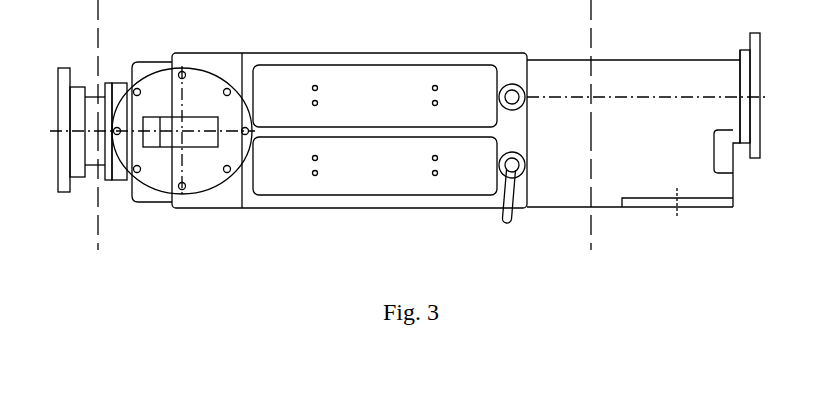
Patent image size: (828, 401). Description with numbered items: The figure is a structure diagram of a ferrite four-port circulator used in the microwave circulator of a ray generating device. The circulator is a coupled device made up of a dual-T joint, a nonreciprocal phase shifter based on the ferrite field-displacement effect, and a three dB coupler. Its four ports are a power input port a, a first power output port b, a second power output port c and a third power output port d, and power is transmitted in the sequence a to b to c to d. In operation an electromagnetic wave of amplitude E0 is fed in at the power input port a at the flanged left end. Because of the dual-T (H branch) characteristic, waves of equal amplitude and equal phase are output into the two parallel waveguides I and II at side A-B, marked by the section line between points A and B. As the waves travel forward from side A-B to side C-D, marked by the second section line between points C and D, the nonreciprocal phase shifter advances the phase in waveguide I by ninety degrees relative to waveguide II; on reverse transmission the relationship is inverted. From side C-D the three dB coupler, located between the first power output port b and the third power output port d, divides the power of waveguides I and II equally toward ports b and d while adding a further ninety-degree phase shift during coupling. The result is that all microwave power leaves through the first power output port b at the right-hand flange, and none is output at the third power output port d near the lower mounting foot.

The side A-B end point A is at (83, 65).
The side A-B end point B is at (86, 192).
The side C-D end point C is at (576, 65).
The side C-D end point D is at (576, 192).
The power input port a is at (83, 129).
The first power output port b is at (763, 95).
The second power output port c is at (180, 119).
The third power output port d is at (677, 215).
The waveguide I is at (375, 96).
The waveguide II is at (375, 166).